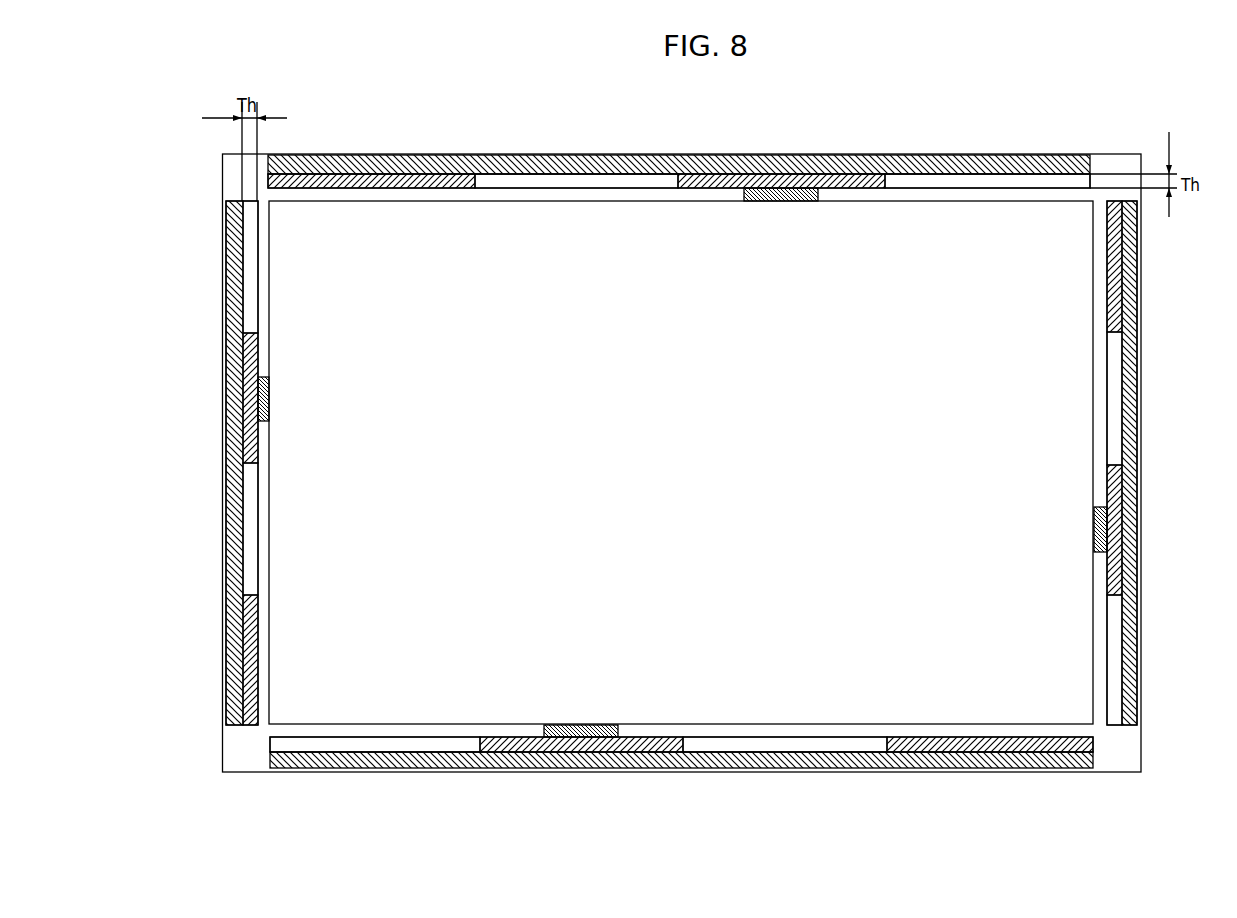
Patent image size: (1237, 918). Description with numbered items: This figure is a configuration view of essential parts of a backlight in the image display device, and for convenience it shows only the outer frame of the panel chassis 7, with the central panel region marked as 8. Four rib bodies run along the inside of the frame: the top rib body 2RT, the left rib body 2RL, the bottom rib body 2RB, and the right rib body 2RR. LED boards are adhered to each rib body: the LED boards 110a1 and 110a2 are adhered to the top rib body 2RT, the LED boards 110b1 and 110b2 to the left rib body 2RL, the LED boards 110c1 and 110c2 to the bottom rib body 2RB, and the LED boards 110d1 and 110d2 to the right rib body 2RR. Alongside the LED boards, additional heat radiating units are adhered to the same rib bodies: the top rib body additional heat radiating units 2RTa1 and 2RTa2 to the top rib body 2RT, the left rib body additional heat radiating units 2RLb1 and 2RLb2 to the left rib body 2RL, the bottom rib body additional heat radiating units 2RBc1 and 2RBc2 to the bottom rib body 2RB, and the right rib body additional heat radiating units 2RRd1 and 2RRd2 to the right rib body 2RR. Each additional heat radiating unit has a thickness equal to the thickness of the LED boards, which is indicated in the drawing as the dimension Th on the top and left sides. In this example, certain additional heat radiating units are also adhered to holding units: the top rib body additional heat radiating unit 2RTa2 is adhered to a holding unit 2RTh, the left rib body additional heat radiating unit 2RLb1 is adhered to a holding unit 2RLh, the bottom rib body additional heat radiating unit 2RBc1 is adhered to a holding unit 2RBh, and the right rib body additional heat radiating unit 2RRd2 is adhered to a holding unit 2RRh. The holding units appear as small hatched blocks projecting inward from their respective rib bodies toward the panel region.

The panel chassis 7 is at (1120, 153).
The display panel 8 is at (643, 428).
The top rib body 2RT is at (648, 154).
The top rib body additional heat radiating unit 2RTa1 is at (428, 181).
The LED board 110a1 is at (566, 181).
The top rib body additional heat radiating unit 2RTa2 is at (706, 181).
The holding unit 2RTh is at (792, 196).
The LED board 110a2 is at (980, 181).
The left rib body 2RL is at (226, 468).
The LED board 110b1 is at (256, 287).
The left rib body additional heat radiating unit 2RLb1 is at (252, 444).
The holding unit 2RLh is at (268, 397).
The LED board 110b2 is at (254, 526).
The left rib body additional heat radiating unit 2RLb2 is at (252, 624).
The right rib body 2RR is at (1138, 465).
The right rib body additional heat radiating unit 2RRd1 is at (1108, 303).
The LED board 110d1 is at (1110, 400).
The right rib body additional heat radiating unit 2RRd2 is at (1110, 484).
The holding unit 2RRh is at (1098, 530).
The LED board 110d2 is at (1110, 640).
The bottom rib body 2RB is at (713, 770).
The LED board 110c1 is at (388, 746).
The bottom rib body additional heat radiating unit 2RBc1 is at (660, 745).
The holding unit 2RBh is at (573, 730).
The LED board 110c2 is at (798, 746).
The bottom rib body additional heat radiating unit 2RBc2 is at (940, 746).